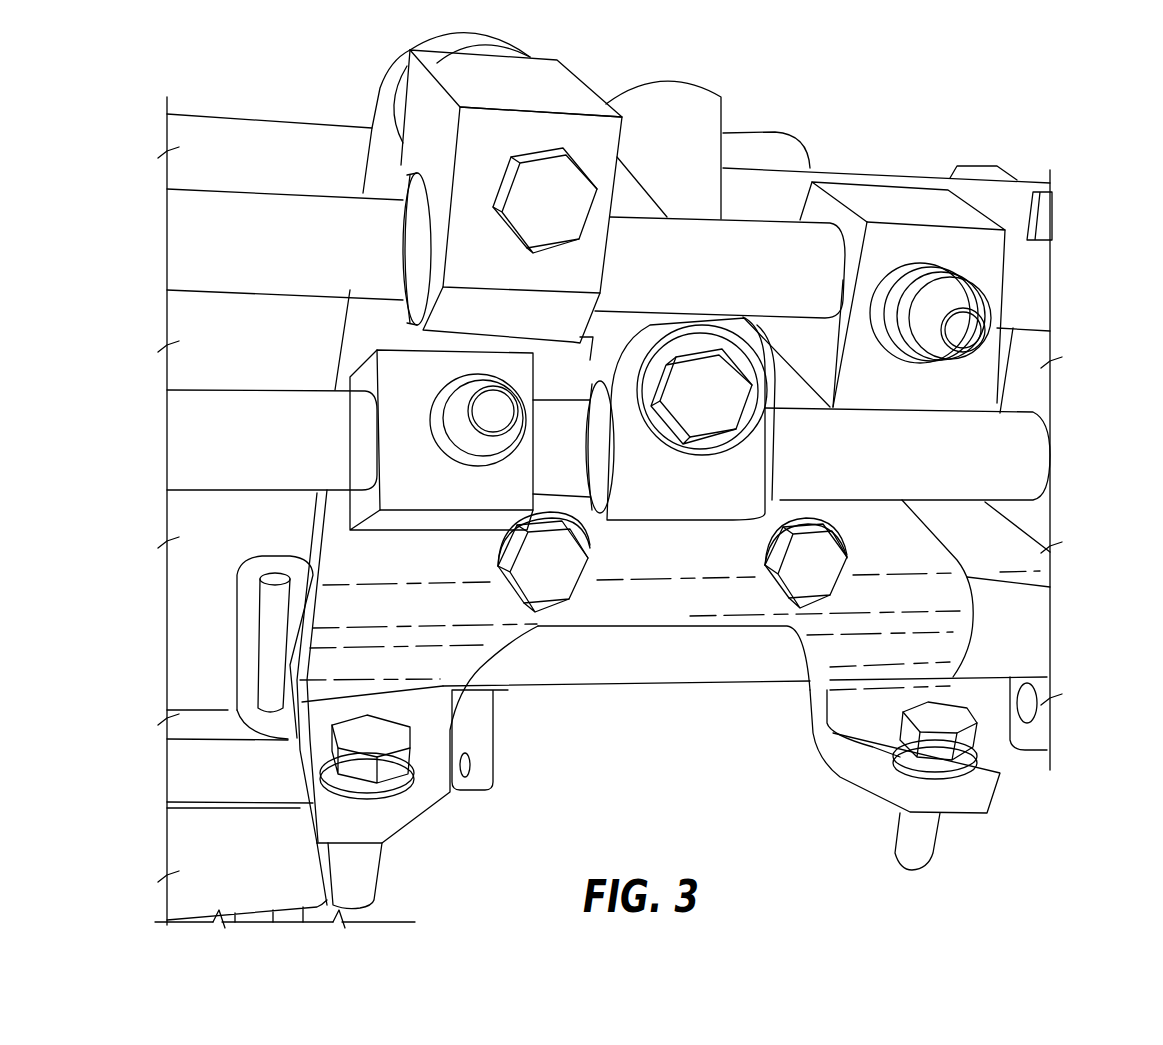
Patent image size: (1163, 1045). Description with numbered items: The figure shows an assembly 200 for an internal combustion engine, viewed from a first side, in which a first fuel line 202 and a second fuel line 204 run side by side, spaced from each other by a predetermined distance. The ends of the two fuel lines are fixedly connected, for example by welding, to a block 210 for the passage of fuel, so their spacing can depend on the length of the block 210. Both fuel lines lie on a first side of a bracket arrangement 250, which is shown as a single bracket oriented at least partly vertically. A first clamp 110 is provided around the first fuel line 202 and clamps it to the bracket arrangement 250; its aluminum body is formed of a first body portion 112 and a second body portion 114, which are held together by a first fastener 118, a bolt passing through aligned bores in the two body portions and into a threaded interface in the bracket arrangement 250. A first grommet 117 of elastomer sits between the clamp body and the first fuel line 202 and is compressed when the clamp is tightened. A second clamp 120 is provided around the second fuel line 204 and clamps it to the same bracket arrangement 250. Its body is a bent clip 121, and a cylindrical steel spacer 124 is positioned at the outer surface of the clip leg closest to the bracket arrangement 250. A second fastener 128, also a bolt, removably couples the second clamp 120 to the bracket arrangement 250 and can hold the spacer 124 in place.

The first clamp 110 is at (588, 62).
The first body portion 112 is at (440, 63).
The second body portion 114 is at (520, 93).
The first grommet 117 is at (405, 187).
The first fastener 118 is at (567, 180).
The second clamp 120 is at (682, 533).
The bent clip 121 is at (640, 497).
The spacer 124 is at (583, 342).
The second fastener 128 is at (735, 413).
The assembly 200 is at (848, 86).
The first fuel line 202 is at (187, 235).
The second fuel line 204 is at (183, 435).
The block 210 is at (1043, 208).
The bracket arrangement 250 is at (577, 600).